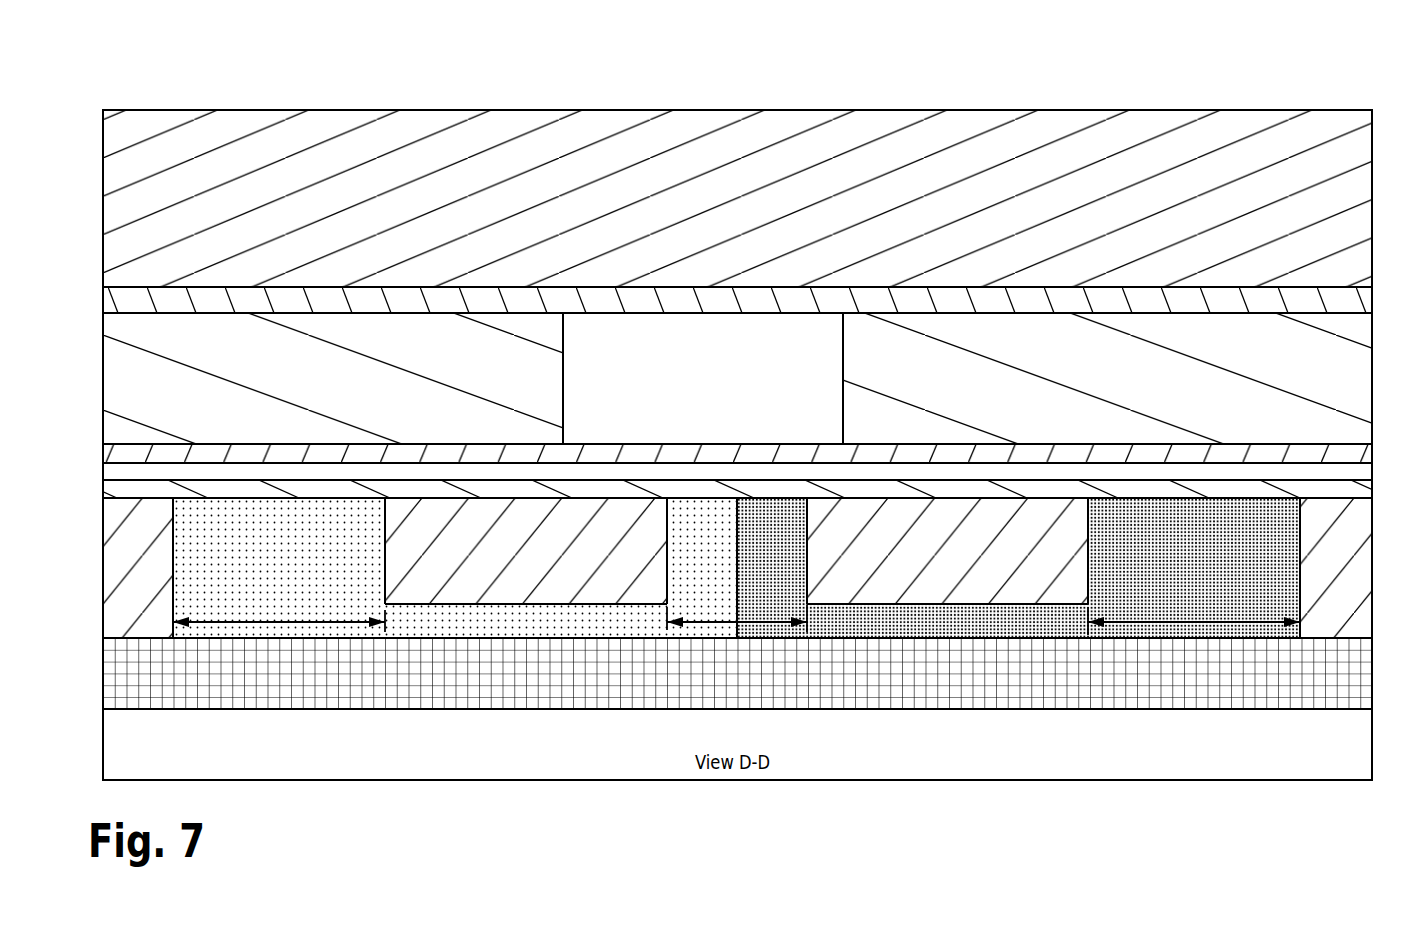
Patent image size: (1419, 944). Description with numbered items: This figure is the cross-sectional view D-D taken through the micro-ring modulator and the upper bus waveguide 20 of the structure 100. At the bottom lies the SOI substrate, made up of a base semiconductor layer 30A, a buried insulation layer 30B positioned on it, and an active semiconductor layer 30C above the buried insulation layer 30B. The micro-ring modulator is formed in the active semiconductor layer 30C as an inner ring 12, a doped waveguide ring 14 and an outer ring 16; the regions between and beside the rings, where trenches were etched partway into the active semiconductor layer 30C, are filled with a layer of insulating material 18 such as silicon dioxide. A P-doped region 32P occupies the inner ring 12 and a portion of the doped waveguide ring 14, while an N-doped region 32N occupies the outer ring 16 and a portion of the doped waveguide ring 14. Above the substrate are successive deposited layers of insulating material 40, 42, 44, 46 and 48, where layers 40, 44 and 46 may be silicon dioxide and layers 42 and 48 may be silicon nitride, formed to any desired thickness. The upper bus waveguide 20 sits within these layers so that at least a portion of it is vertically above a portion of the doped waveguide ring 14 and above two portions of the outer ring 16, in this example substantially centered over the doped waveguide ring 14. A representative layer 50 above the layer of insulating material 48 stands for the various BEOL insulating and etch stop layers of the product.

The structure 100 is at (420, 79).
The representative layer 50 is at (1302, 169).
The layer of insulating material 48 is at (117, 305).
The layer of insulation material 46 is at (1338, 379).
The upper bus waveguide 20 is at (712, 394).
The layer of insulation material 44 is at (118, 455).
The layer of insulating material 42 is at (112, 473).
The layer of insulation material 40 is at (118, 488).
The layer of insulating material 18 is at (150, 595).
The P-doped region 32P is at (295, 581).
The N-doped region 32N is at (1204, 581).
The active semiconductor layer 30C is at (1275, 540).
The buried insulation layer 30B is at (1352, 689).
The base semiconductor layer 30A is at (1352, 762).
The inner ring 12 is at (298, 622).
The doped waveguide ring 14 is at (727, 622).
The outer ring 16 is at (1192, 622).